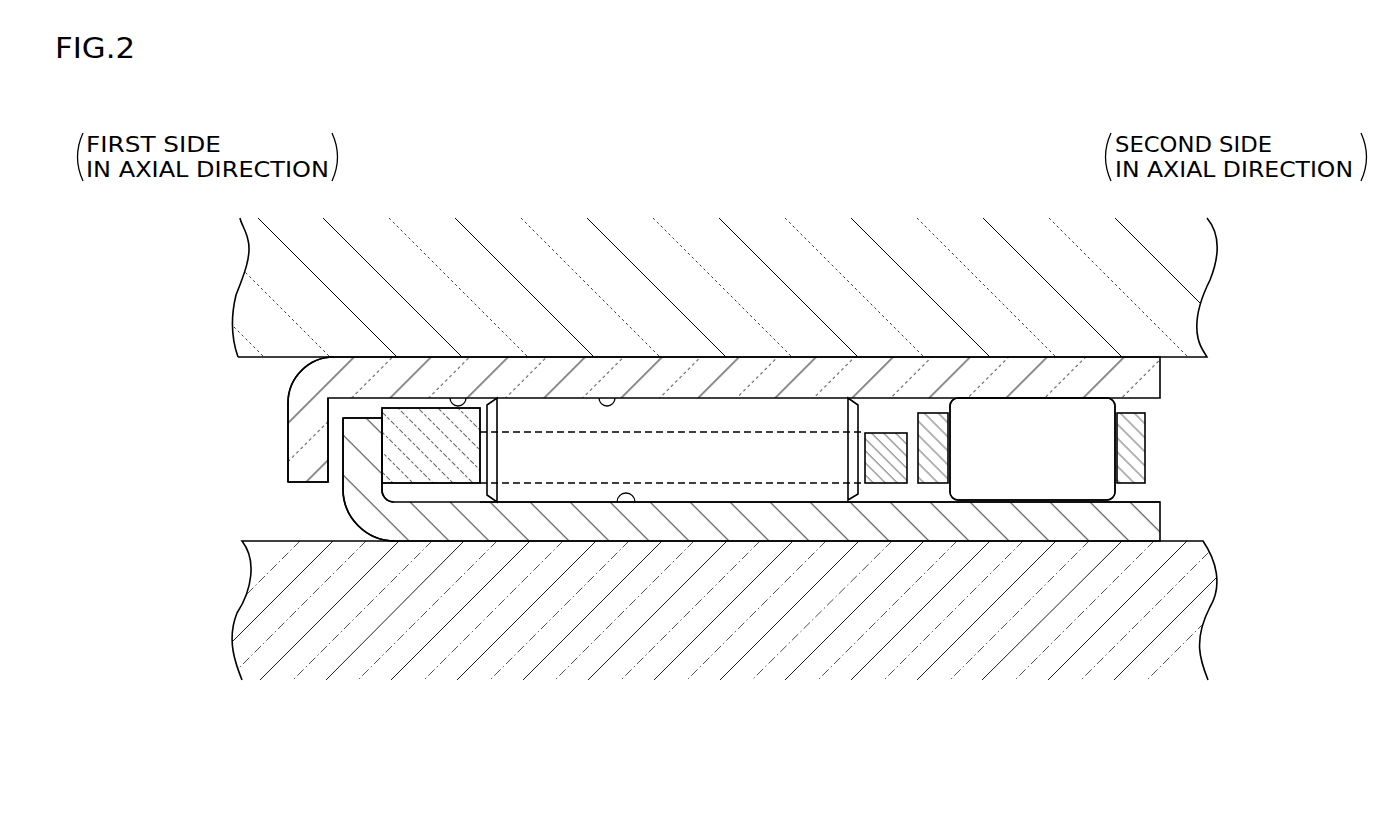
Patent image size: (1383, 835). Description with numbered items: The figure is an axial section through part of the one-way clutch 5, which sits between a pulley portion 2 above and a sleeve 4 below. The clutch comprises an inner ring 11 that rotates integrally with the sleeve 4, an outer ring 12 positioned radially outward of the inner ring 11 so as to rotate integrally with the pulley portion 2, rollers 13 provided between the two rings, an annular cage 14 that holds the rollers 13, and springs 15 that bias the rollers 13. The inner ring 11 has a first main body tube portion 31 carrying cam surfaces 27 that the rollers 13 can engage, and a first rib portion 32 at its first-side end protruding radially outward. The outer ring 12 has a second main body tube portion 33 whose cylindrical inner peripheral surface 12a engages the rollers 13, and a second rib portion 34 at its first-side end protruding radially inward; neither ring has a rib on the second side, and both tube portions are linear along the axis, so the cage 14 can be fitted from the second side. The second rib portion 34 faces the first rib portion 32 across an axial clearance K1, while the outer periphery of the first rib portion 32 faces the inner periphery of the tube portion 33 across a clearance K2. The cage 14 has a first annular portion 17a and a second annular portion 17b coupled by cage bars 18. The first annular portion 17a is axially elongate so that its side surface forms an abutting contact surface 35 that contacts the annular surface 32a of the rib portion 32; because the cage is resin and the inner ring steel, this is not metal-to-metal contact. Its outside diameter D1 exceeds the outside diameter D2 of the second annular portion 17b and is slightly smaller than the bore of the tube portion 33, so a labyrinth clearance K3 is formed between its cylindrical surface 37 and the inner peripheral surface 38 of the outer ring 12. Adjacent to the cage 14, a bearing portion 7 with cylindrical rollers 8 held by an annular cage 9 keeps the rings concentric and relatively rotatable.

The pulley portion 2 is at (797, 253).
The sleeve 4 is at (797, 647).
The one-way clutch 5 is at (810, 346).
The bearing portion 7 is at (985, 385).
The cylindrical rollers 8 is at (1012, 417).
The annular cage 9 is at (1133, 458).
The inner ring 11 is at (703, 513).
The outer ring 12 is at (702, 387).
The cylindrical inner peripheral surface 12a is at (616, 395).
The rollers 13 is at (530, 415).
The cage 14 is at (898, 422).
The springs 15 is at (747, 452).
The first annular portion 17a is at (433, 425).
The second annular portion 17b is at (882, 440).
The cage bars 18 is at (652, 432).
The cam surfaces 27 is at (617, 505).
The first main body tube portion 31 is at (557, 515).
The first rib portion 32 is at (358, 455).
The annular surface 32a is at (382, 457).
The second main body tube portion 33 is at (560, 385).
The second rib portion 34 is at (288, 468).
The abutting contact surface 35 is at (382, 457).
The cylindrical surface 37 is at (403, 410).
The inner peripheral surface 38 is at (467, 400).
The clearance K1 is at (340, 500).
The clearance K2 is at (351, 412).
The labyrinth clearance K3 is at (376, 403).
The outside diameter of first annular portion D1 is at (517, 405).
The outside diameter of second annular portion D2 is at (966, 432).